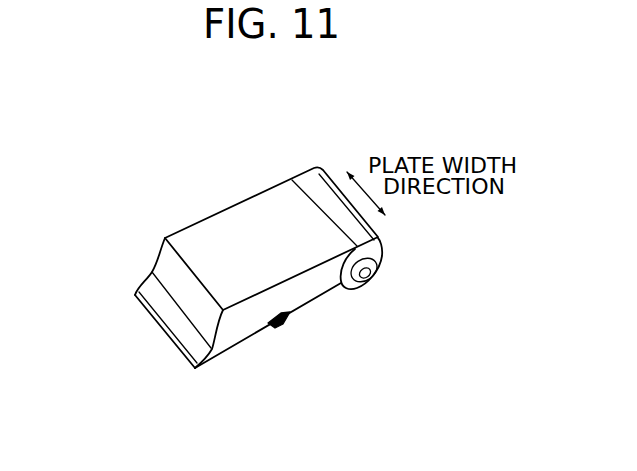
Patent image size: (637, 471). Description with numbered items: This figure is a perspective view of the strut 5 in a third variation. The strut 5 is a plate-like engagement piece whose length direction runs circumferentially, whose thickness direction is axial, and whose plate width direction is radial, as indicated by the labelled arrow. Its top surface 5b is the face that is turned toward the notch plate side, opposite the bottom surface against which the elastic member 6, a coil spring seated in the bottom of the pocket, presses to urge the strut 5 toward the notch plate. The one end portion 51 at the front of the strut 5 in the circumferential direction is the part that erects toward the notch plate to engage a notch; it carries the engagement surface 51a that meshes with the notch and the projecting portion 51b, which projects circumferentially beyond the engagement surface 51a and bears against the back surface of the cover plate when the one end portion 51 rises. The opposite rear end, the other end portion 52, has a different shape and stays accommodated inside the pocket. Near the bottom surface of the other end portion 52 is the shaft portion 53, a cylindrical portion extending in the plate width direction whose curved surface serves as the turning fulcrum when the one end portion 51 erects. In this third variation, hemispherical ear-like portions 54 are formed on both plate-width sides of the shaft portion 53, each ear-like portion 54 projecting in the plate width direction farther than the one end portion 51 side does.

The strut 5 is at (232, 155).
The top surface 5b is at (227, 240).
The elastic member 6 is at (278, 327).
The one end portion 51 is at (142, 328).
The engagement surface 51a is at (178, 275).
The projecting portion 51b is at (183, 336).
The other end portion 52 is at (329, 169).
The shaft portion 53 is at (389, 265).
The ear-like portion 54 is at (364, 274).